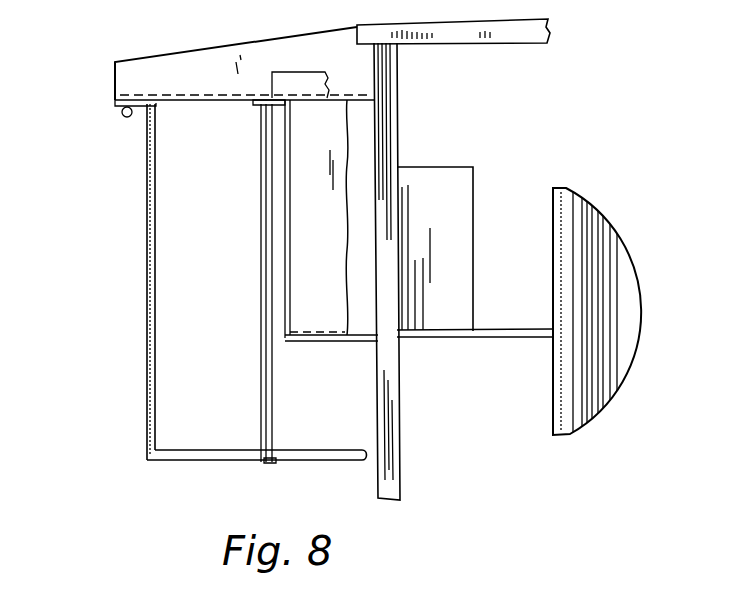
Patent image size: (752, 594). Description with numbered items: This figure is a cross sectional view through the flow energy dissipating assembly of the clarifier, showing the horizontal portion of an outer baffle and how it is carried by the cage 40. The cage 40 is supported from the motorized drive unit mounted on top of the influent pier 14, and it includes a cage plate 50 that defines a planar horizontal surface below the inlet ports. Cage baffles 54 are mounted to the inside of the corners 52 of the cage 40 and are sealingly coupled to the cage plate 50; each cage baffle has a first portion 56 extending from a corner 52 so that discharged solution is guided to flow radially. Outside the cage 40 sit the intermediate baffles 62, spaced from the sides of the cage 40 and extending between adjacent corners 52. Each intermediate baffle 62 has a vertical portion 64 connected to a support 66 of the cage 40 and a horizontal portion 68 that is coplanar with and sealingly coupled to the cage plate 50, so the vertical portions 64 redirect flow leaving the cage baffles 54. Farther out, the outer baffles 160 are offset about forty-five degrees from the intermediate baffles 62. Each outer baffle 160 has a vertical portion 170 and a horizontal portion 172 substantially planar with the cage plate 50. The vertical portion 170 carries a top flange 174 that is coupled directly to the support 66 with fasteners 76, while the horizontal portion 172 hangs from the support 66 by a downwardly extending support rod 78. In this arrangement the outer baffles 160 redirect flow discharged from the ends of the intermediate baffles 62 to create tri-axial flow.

The influent pier 14 is at (630, 283).
The cage 40 is at (501, 46).
The cage plate 50 is at (500, 338).
The corners 52 is at (397, 113).
The cage baffles 54 is at (455, 186).
The first portion 56 is at (474, 197).
The intermediate baffles 62 is at (298, 157).
The vertical portions 64 is at (332, 246).
The supports 66 is at (236, 49).
The horizontal portions 68 is at (362, 344).
The fasteners 76 is at (123, 120).
The support rods 78 is at (262, 281).
The outer baffles 160 is at (202, 282).
The vertical portions 170 is at (154, 199).
The horizontal portions 172 is at (236, 448).
The top flanges 174 is at (118, 108).